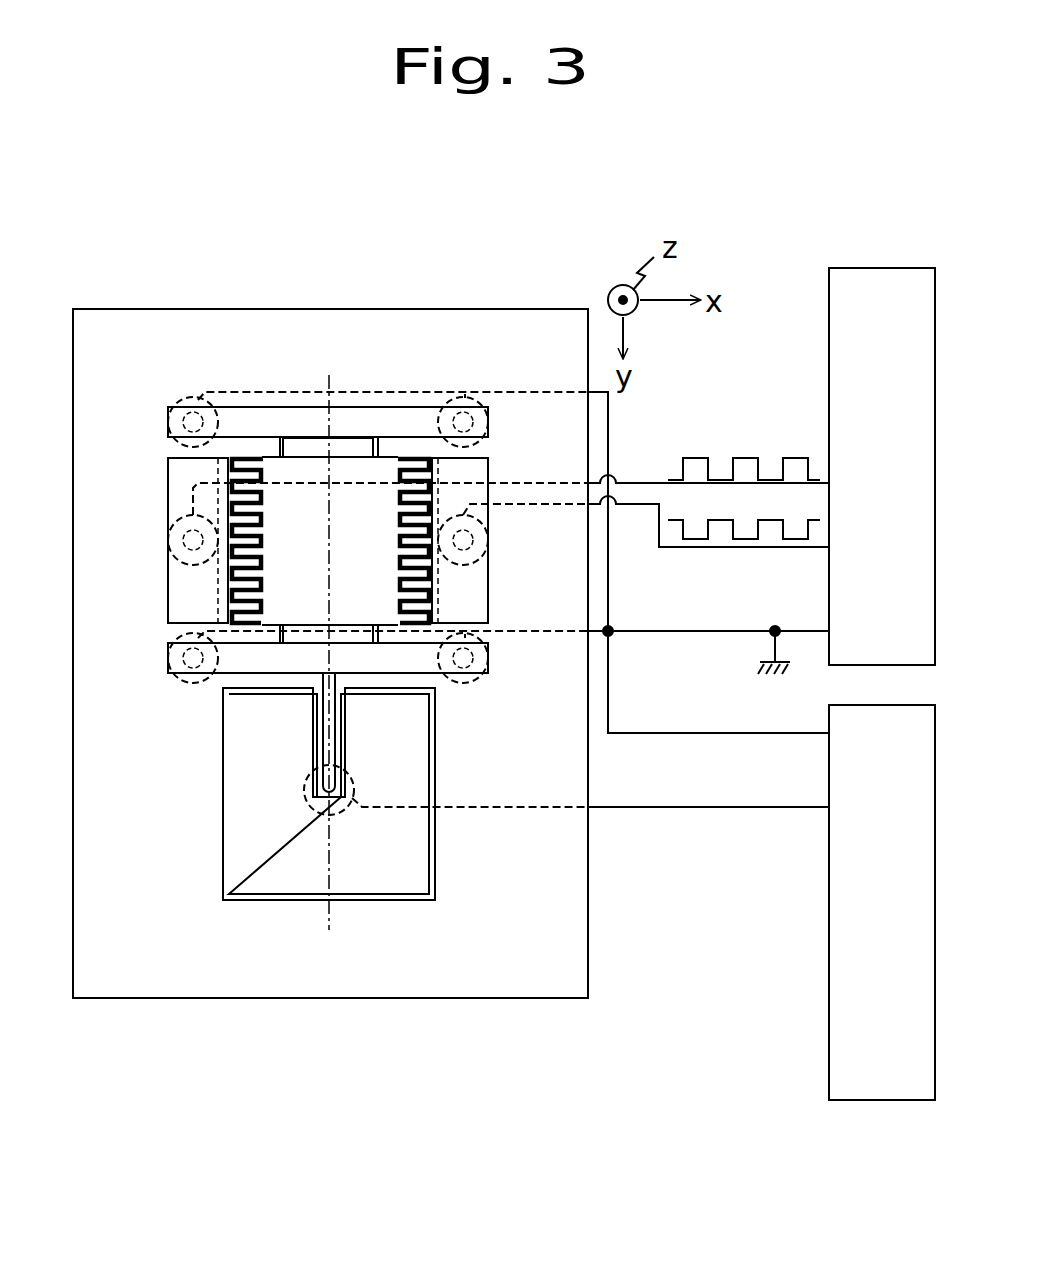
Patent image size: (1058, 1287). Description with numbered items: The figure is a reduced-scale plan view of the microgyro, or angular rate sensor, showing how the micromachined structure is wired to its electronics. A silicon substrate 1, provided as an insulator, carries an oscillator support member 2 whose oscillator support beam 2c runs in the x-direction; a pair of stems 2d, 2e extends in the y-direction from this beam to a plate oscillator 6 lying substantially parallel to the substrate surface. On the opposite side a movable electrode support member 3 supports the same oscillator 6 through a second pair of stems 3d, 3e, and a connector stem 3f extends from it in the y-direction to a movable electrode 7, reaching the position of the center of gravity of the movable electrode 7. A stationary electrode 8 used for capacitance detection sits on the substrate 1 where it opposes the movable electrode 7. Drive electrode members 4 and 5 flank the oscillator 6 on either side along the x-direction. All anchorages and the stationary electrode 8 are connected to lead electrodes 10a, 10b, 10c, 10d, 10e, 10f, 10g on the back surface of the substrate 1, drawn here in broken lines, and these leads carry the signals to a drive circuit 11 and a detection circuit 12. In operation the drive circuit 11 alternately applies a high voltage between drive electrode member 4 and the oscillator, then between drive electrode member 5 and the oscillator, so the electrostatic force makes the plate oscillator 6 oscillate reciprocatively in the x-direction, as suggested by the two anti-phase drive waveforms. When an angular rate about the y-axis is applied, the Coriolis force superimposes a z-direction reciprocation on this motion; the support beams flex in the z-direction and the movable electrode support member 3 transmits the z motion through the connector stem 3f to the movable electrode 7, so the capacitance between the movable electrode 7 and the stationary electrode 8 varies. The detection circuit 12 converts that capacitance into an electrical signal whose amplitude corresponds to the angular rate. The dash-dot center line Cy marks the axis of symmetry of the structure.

The silicon substrate 1 is at (237, 309).
The oscillator support member 2 is at (283, 405).
The oscillator support beam 2c is at (358, 418).
The stem 2d is at (270, 445).
The stem 2e is at (393, 445).
The movable electrode support member 3 is at (228, 674).
The stem 3d is at (282, 632).
The stem 3e is at (380, 640).
The connector stem 3f is at (336, 717).
The drive electrode member 4 is at (166, 567).
The drive electrode member 5 is at (489, 516).
The plate oscillator 6 is at (316, 573).
The movable electrode 7 is at (292, 868).
The stationary electrode 8 is at (438, 864).
The lead electrode 10a is at (180, 398).
The lead electrode 10b is at (486, 443).
The lead electrode 10c is at (178, 520).
The lead electrode 10d is at (482, 563).
The lead electrode 10e is at (178, 638).
The lead electrode 10f is at (484, 678).
The lead electrode 10g is at (303, 792).
The drive circuit 11 is at (829, 268).
The detection circuit 12 is at (829, 1018).
The centre axis Cy is at (333, 392).